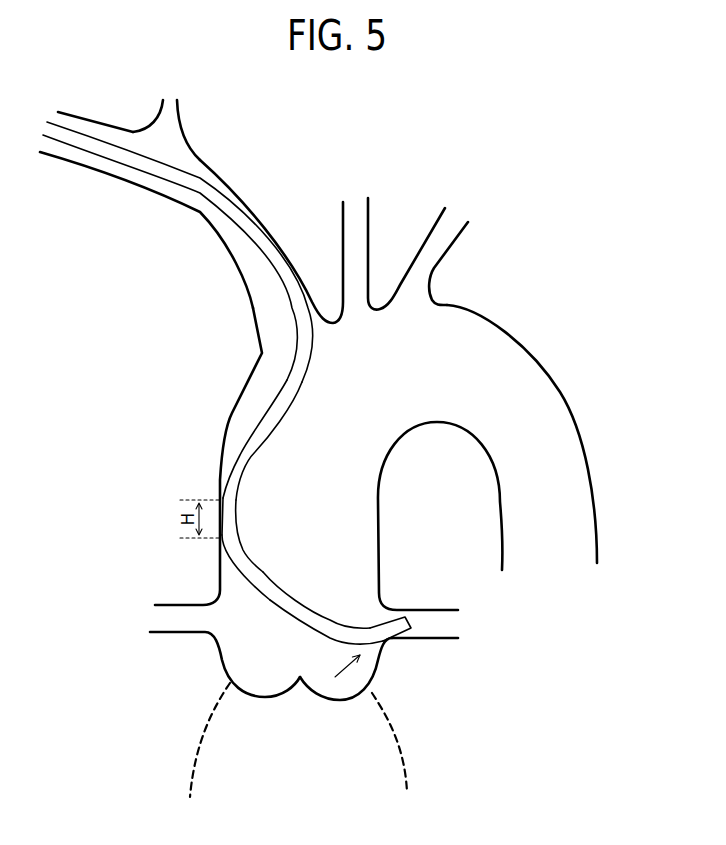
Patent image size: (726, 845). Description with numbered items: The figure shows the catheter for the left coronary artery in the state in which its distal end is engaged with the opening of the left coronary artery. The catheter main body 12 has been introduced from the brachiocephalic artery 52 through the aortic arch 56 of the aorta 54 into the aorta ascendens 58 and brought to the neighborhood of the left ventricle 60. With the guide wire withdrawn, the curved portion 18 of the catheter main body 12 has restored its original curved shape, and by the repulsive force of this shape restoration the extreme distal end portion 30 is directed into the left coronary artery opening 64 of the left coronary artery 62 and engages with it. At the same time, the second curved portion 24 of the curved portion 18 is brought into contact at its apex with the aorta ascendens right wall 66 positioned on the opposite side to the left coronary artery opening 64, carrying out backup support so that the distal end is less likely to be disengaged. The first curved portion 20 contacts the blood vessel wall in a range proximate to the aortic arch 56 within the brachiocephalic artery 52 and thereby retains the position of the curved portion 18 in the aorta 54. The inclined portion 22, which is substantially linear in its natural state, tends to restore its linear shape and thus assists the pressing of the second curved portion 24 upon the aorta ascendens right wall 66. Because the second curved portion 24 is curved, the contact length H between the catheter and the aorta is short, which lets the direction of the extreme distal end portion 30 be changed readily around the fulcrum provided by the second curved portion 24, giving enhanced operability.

The catheter main body 12 is at (226, 186).
The curved portion 18 is at (280, 613).
The first curved portion 20 is at (291, 309).
The inclined portion 22 is at (272, 412).
The second curved portion 24 is at (236, 533).
The extreme distal end portion 30 is at (390, 626).
The brachiocephalic artery 52 is at (205, 222).
The aorta 54 is at (557, 372).
The aortic arch 56 is at (420, 362).
The aorta ascendens 58 is at (347, 527).
The left ventricle 60 is at (238, 742).
The left coronary artery 62 is at (441, 643).
The left coronary artery opening 64 is at (388, 597).
The aorta ascendens right wall 66 is at (230, 513).